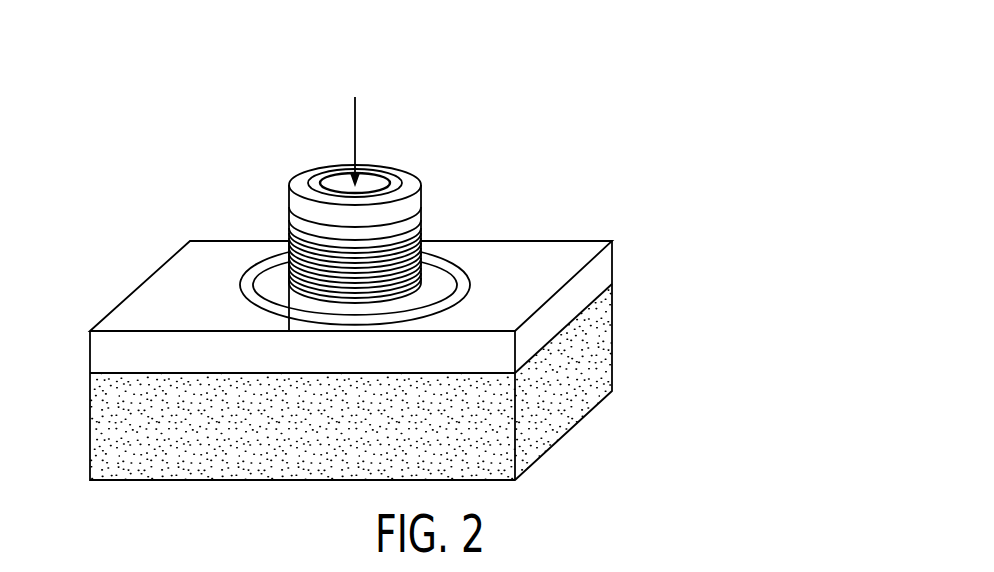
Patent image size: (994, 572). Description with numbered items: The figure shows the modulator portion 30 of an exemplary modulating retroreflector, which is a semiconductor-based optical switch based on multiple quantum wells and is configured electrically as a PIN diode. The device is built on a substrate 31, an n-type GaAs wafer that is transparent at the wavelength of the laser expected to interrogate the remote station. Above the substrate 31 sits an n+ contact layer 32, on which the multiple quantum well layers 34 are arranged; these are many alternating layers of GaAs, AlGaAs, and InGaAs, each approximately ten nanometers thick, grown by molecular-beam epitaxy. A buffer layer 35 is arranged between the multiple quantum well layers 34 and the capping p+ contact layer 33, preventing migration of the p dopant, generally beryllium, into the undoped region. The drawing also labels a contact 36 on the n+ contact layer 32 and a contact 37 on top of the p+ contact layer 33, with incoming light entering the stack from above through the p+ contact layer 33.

The modulator portion 30 is at (290, 97).
The substrate 31 is at (598, 357).
The n+ contact layer 32 is at (597, 278).
The p+ contact layer 33 is at (420, 184).
The multiple quantum well layers 34 is at (421, 255).
The buffer layer 35 is at (421, 207).
The contact 36 is at (247, 282).
The contact 37 is at (308, 184).